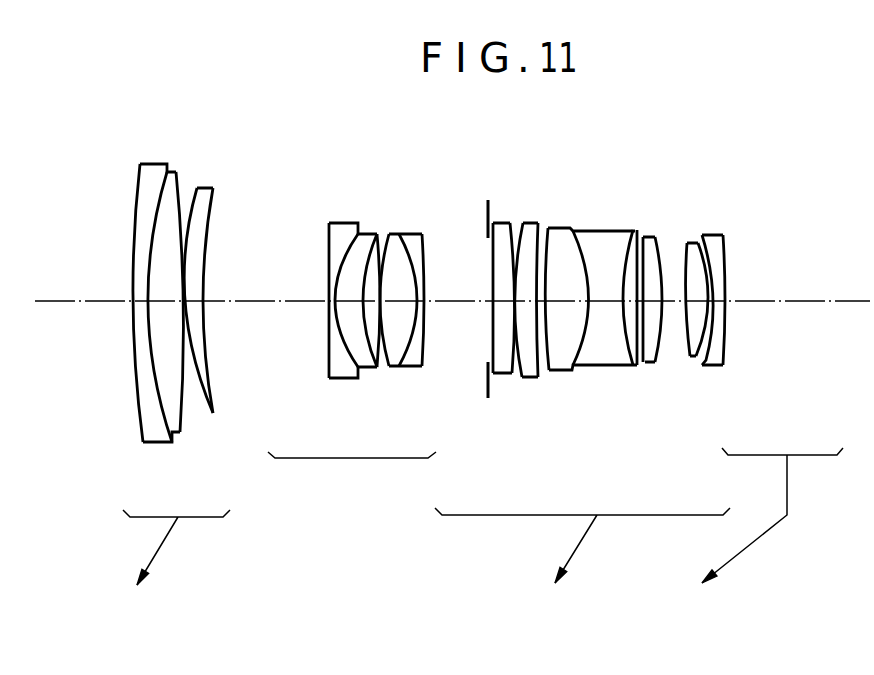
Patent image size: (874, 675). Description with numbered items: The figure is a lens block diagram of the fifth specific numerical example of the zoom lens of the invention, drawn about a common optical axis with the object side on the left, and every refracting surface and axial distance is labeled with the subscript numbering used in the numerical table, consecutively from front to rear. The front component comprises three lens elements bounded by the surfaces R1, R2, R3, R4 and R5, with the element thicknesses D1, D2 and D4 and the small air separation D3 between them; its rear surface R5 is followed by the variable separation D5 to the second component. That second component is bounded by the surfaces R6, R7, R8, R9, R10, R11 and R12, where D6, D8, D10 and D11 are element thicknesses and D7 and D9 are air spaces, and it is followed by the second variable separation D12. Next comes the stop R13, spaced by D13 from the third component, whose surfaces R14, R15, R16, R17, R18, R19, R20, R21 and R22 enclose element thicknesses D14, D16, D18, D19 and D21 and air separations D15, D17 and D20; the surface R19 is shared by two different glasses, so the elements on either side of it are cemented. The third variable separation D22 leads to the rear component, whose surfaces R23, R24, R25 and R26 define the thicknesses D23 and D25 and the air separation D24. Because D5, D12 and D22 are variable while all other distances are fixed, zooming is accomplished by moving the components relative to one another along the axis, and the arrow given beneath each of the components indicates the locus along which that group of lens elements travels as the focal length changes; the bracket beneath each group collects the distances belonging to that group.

The radius of curvature R1 is at (138, 192).
The radius of curvature R2 is at (156, 191).
The radius of curvature R3 is at (181, 195).
The radius of curvature R4 is at (200, 199).
The radius of curvature R5 is at (217, 200).
The radius of curvature R6 is at (328, 245).
The radius of curvature R7 is at (339, 222).
The radius of curvature R8 is at (359, 233).
The radius of curvature R9 is at (372, 232).
The radius of curvature R10 is at (389, 240).
The radius of curvature R11 is at (399, 232).
The radius of curvature R12 is at (421, 234).
The stop R13 is at (490, 222).
The radius of curvature R14 is at (507, 224).
The radius of curvature R15 is at (522, 223).
The radius of curvature R16 is at (539, 226).
The radius of curvature R17 is at (553, 227).
The radius of curvature R18 is at (574, 230).
The radius of curvature R19 is at (624, 230).
The radius of curvature R20 is at (640, 238).
The radius of curvature R21 is at (650, 234).
The radius of curvature R22 is at (661, 240).
The radius of curvature R23 is at (688, 242).
The radius of curvature R24 is at (702, 242).
The radius of curvature R25 is at (724, 233).
The radius of curvature R26 is at (728, 238).
The axial thickness D1 is at (150, 444).
The axial thickness D2 is at (169, 440).
The axial separation D3 is at (182, 418).
The axial thickness D4 is at (204, 400).
The variable axial separation D5 is at (241, 305).
The axial thickness D6 is at (332, 355).
The axial separation D7 is at (345, 350).
The axial thickness D8 is at (368, 352).
The axial separation D9 is at (383, 345).
The axial thickness D10 is at (398, 310).
The axial thickness D11 is at (418, 312).
The variable axial separation D12 is at (453, 308).
The axial separation D13 is at (490, 330).
The axial thickness D14 is at (513, 378).
The axial separation D15 is at (530, 378).
The axial thickness D16 is at (541, 378).
The axial separation D17 is at (556, 372).
The axial thickness D18 is at (593, 368).
The axial thickness D19 is at (620, 366).
The axial separation D20 is at (640, 364).
The axial thickness D21 is at (652, 363).
The variable axial separation D22 is at (674, 305).
The axial thickness D23 is at (694, 358).
The axial separation D24 is at (710, 366).
The axial thickness D25 is at (729, 363).